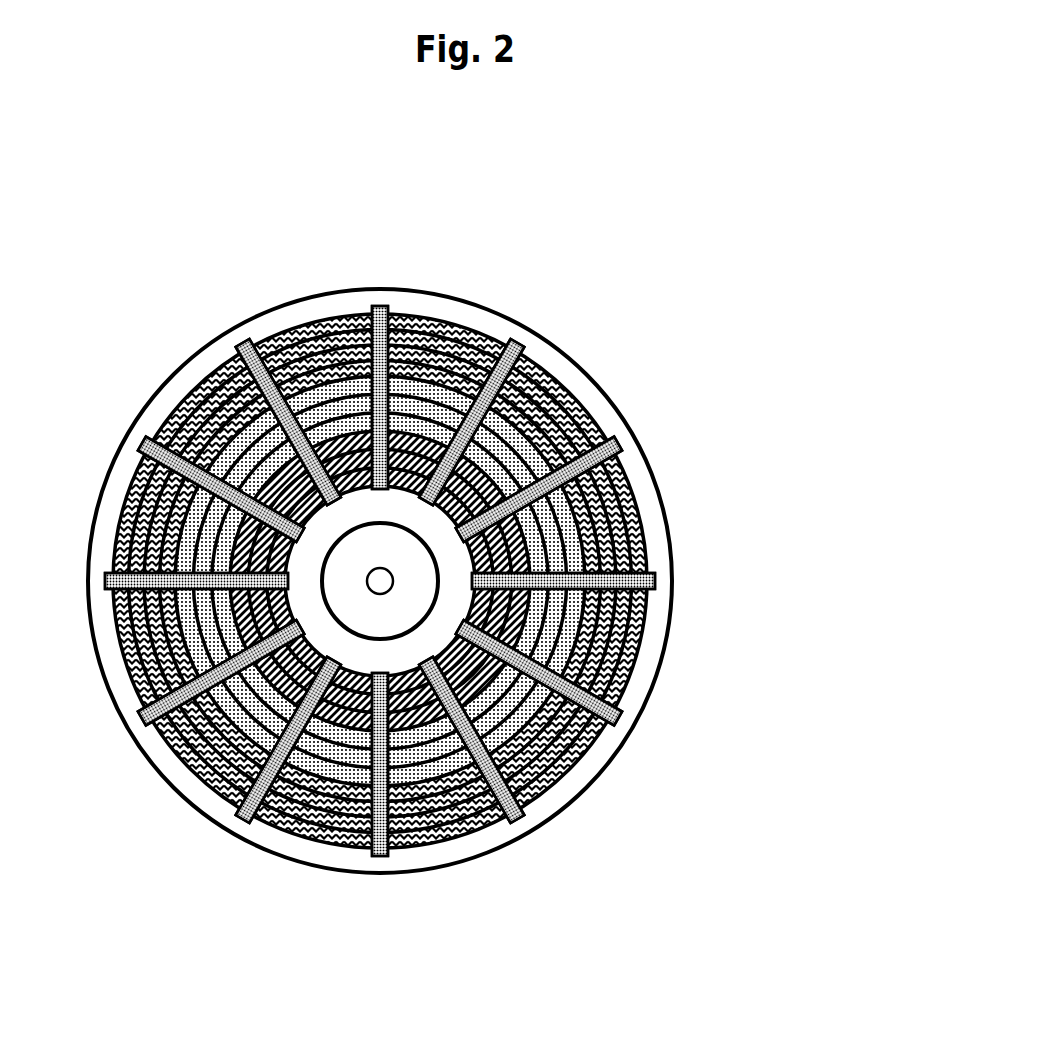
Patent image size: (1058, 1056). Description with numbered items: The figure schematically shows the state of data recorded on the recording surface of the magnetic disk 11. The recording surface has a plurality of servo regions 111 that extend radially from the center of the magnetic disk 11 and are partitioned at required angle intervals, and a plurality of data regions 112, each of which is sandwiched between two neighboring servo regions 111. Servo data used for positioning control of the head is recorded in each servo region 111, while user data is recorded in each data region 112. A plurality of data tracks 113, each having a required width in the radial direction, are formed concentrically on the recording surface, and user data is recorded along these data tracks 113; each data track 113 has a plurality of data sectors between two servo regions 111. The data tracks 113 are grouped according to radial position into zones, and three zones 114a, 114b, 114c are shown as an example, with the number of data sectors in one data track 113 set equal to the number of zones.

The magnetic disk 11 is at (290, 932).
The servo region 111 is at (623, 450).
The data region 112 is at (475, 335).
The data track 113 is at (640, 530).
The zone 114a is at (462, 830).
The zone 114b is at (573, 755).
The zone 114c is at (640, 653).